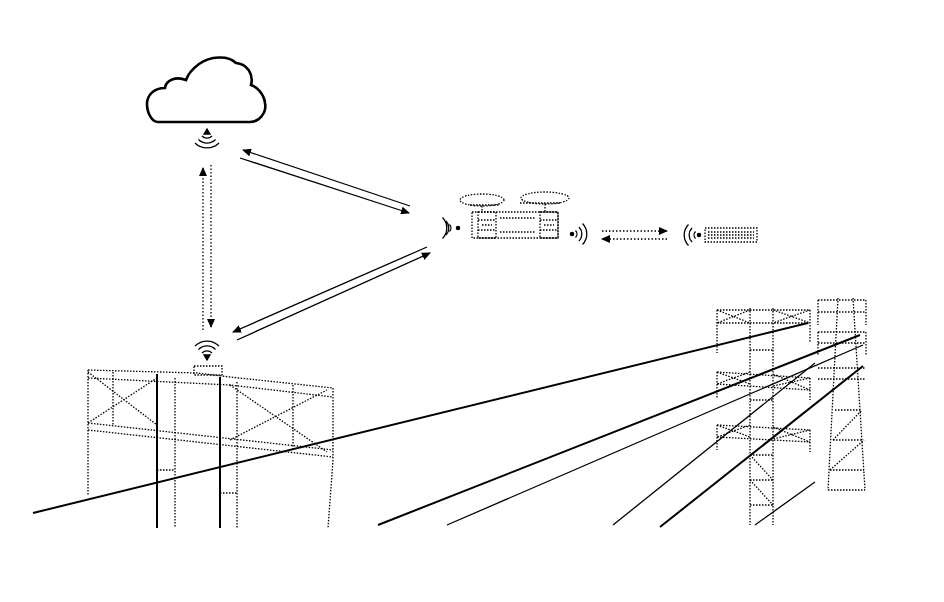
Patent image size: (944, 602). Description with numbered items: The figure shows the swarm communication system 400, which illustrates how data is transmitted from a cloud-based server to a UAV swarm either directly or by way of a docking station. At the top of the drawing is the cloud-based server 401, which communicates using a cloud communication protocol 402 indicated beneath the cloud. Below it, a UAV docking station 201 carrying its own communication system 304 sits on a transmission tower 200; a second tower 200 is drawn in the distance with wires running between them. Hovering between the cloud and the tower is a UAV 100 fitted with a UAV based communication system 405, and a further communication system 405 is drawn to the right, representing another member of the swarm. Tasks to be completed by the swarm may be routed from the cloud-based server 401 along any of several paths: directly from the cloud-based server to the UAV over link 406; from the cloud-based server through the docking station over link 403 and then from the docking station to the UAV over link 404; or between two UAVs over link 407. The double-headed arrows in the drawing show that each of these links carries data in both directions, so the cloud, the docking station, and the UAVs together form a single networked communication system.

The swarm communication system 400 is at (102, 62).
The cloud-based server 401 is at (263, 107).
The cloud communication protocol 402 is at (190, 138).
The communication link from cloud-based server through docking station 403 is at (200, 242).
The docking station communication system 304 is at (188, 345).
The UAV docking station 201 is at (240, 372).
The communication link from cloud-based server to UAV 406 is at (327, 170).
The communication link from docking station to UAV 404 is at (360, 292).
The UAV 100 is at (813, 252).
The UAV based communication system 405 is at (567, 243).
The communication link between two UAVs 407 is at (627, 247).
The transmission tower 200 is at (340, 382).